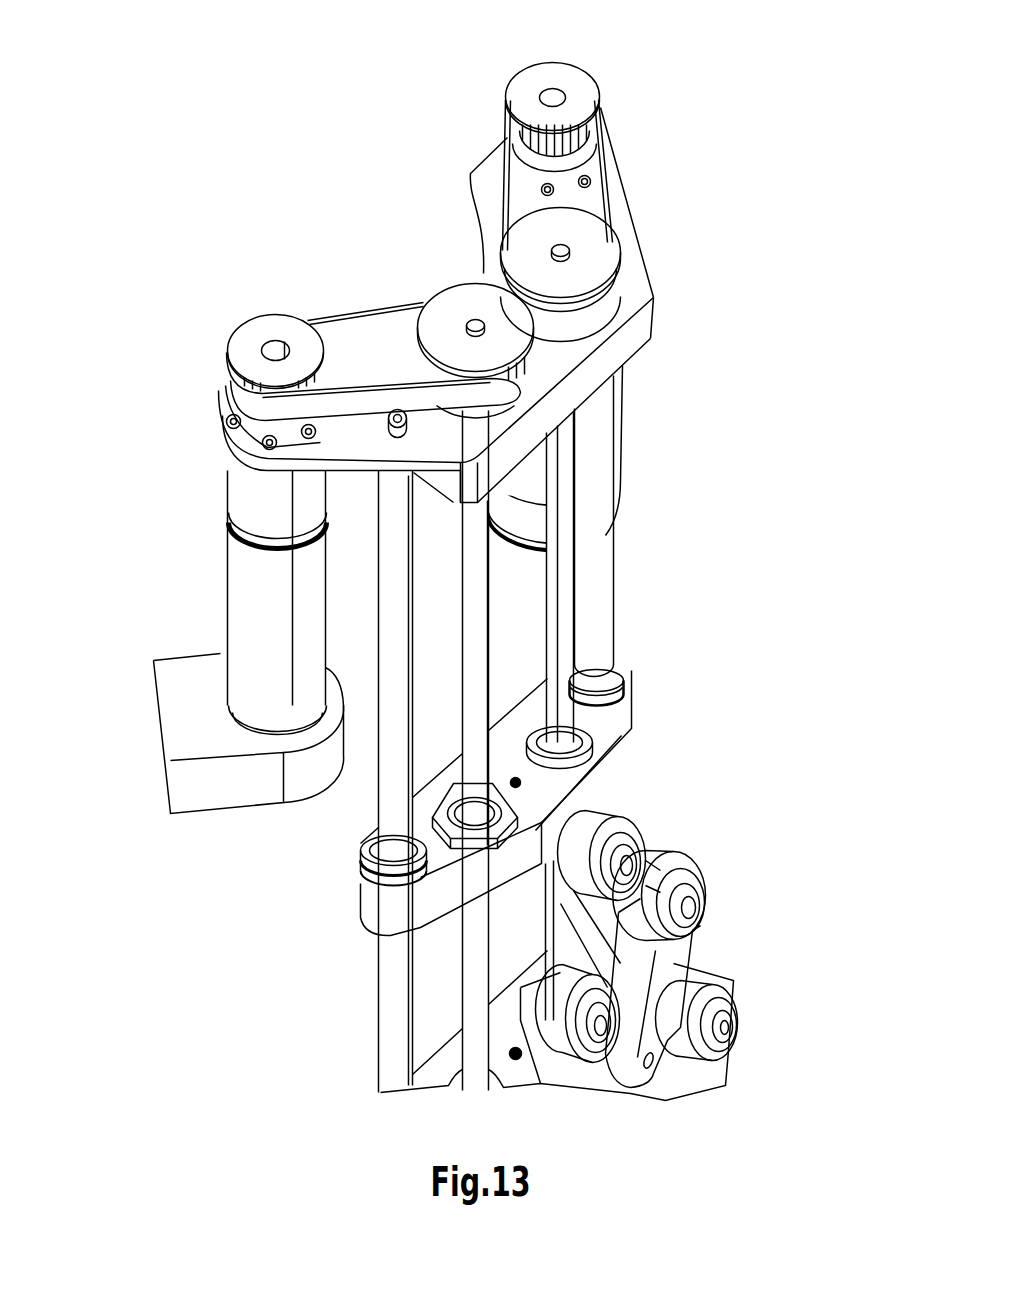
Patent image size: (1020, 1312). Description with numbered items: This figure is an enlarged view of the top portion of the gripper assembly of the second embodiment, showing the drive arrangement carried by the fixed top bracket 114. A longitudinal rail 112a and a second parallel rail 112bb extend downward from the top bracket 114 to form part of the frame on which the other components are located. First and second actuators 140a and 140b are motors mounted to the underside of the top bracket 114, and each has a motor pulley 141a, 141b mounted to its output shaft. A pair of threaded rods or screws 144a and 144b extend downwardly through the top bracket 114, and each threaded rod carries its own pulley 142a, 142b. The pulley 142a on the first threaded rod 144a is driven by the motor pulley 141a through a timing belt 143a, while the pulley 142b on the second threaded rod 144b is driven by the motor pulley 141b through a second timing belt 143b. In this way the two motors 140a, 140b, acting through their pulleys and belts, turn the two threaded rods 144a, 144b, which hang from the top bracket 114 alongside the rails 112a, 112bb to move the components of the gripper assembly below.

The rail 112a is at (400, 803).
The guide shaft 112bb is at (596, 610).
The top bracket 114 is at (640, 285).
The first actuator 140a is at (255, 605).
The second actuator 140b is at (633, 405).
The motor pulley 141a is at (252, 342).
The motor pulley 141b is at (527, 92).
The pulley 142a is at (448, 308).
The pulley 142b is at (597, 247).
The timing belt 143a is at (223, 417).
The timing belt 143b is at (605, 140).
The threaded rod 144a is at (473, 707).
The threaded rod 144b is at (567, 577).